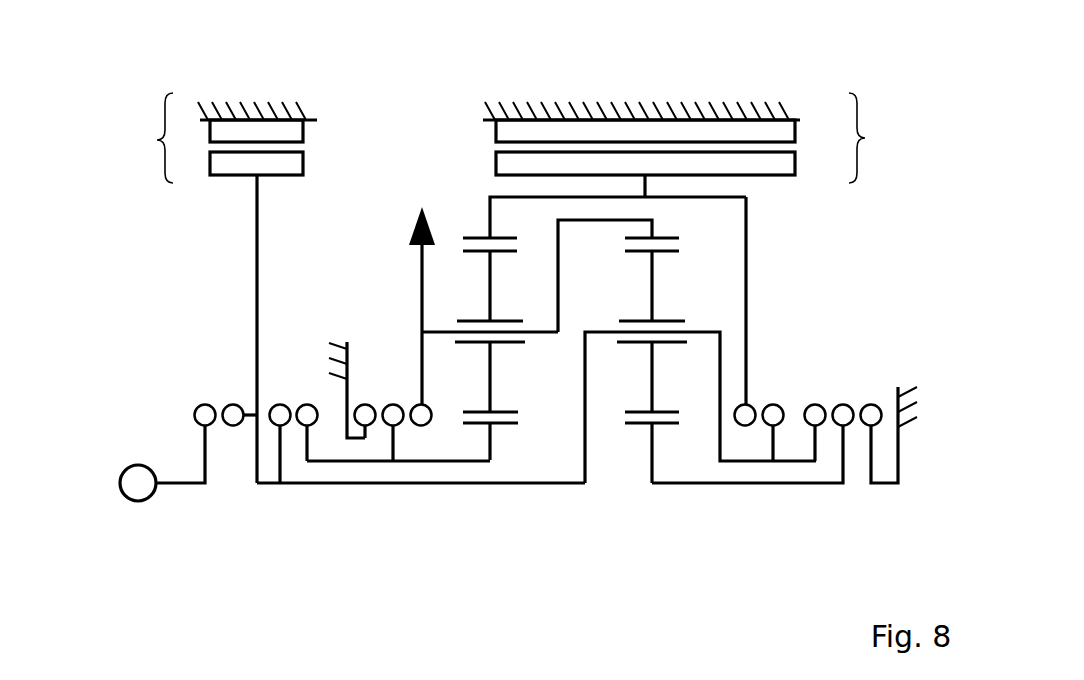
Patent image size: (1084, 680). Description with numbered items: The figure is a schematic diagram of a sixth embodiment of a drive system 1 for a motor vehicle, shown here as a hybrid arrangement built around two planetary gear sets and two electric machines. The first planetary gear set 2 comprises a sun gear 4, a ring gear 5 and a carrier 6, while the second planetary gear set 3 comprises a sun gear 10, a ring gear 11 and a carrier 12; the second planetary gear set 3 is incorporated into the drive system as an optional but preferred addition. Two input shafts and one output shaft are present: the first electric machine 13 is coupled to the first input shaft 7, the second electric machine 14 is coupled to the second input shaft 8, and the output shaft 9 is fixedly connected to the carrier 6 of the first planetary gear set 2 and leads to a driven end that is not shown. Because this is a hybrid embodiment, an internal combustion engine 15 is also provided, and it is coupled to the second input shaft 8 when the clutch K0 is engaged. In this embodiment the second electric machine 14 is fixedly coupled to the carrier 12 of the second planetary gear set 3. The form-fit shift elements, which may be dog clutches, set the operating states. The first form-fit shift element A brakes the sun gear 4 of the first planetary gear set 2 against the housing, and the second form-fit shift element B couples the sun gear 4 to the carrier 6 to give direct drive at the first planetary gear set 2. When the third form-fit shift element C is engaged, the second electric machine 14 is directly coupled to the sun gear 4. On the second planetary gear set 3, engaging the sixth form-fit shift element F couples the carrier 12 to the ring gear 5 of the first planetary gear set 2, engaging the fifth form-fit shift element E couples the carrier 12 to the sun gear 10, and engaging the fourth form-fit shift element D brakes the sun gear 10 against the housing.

The drive system 1 is at (117, 529).
The first planetary gear set 2 is at (490, 494).
The second planetary gear set 3 is at (652, 494).
The sun gear 4 is at (453, 463).
The ring gear 5 is at (490, 217).
The carrier 6 is at (443, 330).
The first input shaft 7 is at (645, 180).
The second input shaft 8 is at (257, 275).
The output shaft 9 is at (420, 285).
The sun gear 10 is at (650, 455).
The ring gear 11 is at (636, 218).
The carrier 12 is at (746, 323).
The first electric machine 13 is at (865, 138).
The second electric machine 14 is at (157, 140).
The internal combustion engine 15 is at (126, 468).
The clutch K0 is at (220, 433).
The first form-fit shift element A is at (376, 433).
The second form-fit shift element B is at (404, 433).
The third form-fit shift element C is at (291, 393).
The fourth form-fit shift element D is at (857, 433).
The fifth form-fit shift element E is at (827, 433).
The sixth form-fit shift element F is at (760, 433).